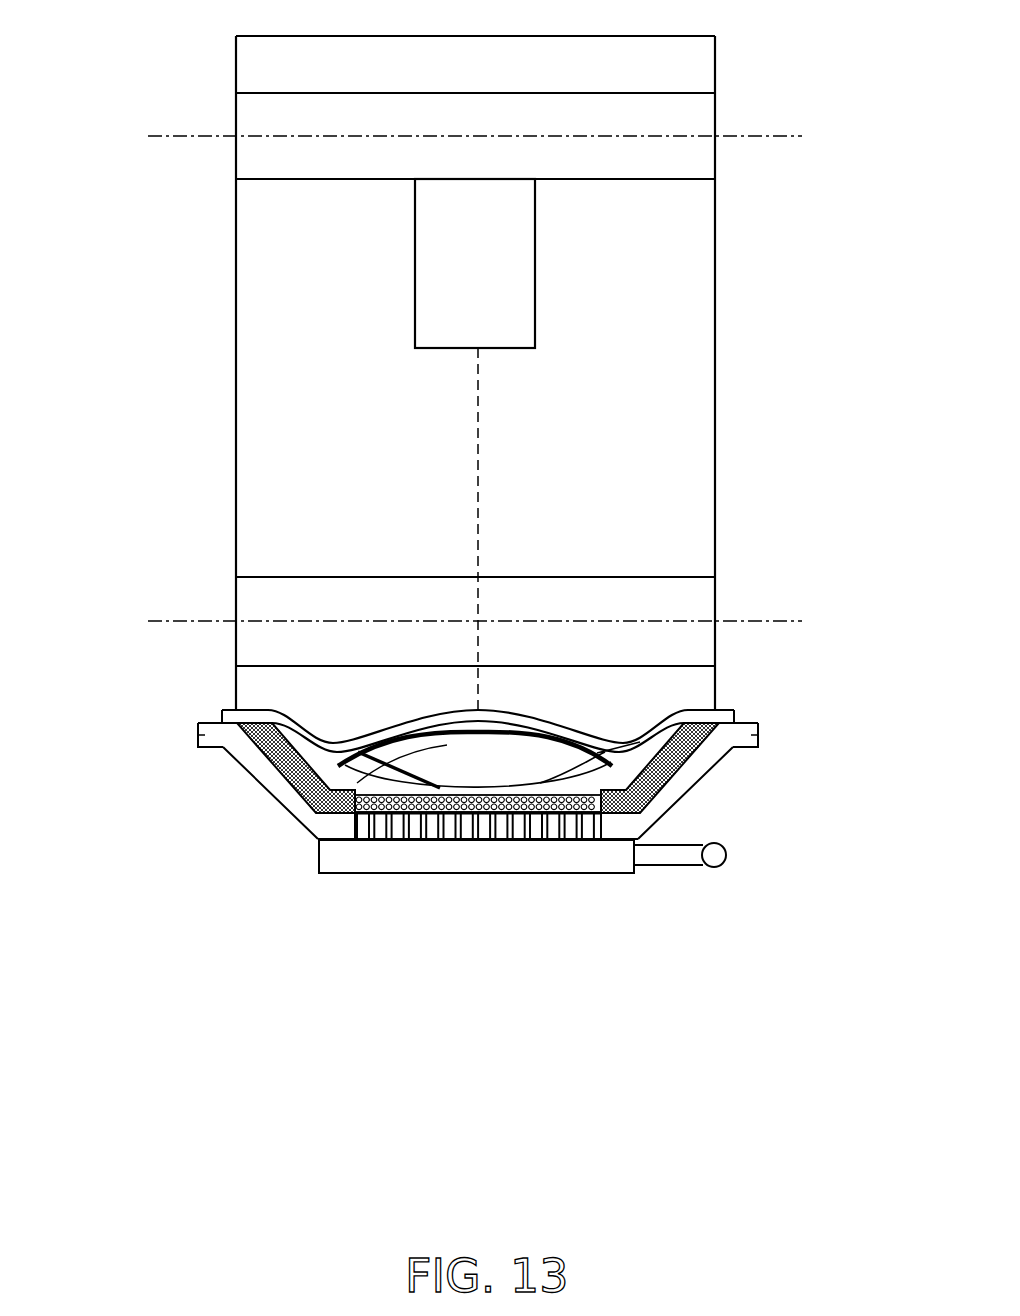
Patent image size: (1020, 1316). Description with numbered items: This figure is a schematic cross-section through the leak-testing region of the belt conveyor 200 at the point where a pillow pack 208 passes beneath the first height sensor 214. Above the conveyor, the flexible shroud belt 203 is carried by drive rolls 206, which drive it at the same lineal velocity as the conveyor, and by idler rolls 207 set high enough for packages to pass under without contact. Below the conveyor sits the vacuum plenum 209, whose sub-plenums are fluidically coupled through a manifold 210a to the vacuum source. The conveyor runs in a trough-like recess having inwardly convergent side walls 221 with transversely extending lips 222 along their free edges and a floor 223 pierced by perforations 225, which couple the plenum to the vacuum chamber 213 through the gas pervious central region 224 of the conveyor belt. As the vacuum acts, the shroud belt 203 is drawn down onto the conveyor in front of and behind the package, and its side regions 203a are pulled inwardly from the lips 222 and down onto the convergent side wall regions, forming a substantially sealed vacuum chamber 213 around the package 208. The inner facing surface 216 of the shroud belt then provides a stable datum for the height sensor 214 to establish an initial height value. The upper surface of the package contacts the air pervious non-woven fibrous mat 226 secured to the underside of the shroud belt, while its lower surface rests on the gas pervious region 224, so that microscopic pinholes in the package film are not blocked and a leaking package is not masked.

The belt conveyor 200 is at (238, 762).
The flexible shroud belt 203 is at (317, 35).
The side regions of shroud belt 203a is at (228, 708).
The drive rolls 206 is at (633, 135).
The idler rolls 207 is at (610, 620).
The pillow pack 208 is at (316, 838).
The vacuum plenum 209 is at (553, 858).
The manifold 210a is at (715, 855).
The vacuum chamber 213 is at (630, 760).
The first height sensor 214 is at (475, 218).
The inner facing surface of shroud belt 216 is at (522, 718).
The inwardly convergent side walls 221 is at (292, 778).
The lips 222 is at (198, 735).
The floor 223 is at (345, 825).
The gas pervious central region 224 is at (427, 817).
The perforations 225 is at (466, 823).
The non-woven fibrous mat 226 is at (268, 752).